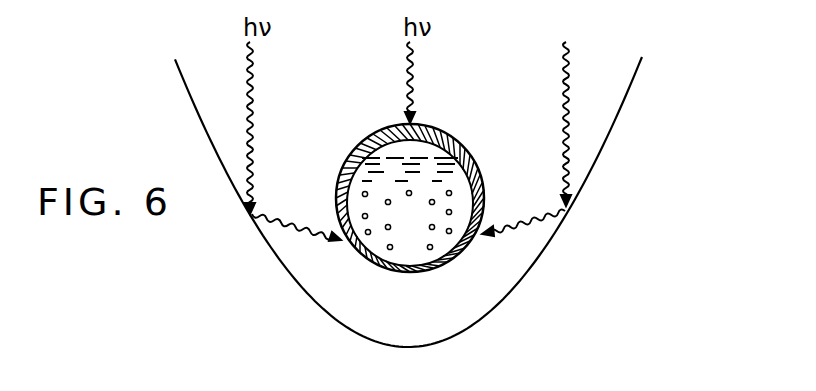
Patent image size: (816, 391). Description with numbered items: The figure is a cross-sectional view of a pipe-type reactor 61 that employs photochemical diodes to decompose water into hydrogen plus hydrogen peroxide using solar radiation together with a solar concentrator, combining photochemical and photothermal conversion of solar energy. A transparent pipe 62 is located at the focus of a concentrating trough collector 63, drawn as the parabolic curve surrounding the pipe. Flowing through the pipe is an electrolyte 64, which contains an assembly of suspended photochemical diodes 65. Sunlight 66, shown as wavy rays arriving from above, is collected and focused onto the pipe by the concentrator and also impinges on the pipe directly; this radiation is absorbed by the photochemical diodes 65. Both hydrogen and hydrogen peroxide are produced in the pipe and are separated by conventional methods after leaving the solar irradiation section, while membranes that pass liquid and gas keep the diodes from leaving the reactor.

The pipe-type reactor 61 is at (416, 228).
The transparent pipe 62 is at (453, 257).
The concentrating trough collector 63 is at (541, 255).
The electrolyte 64 is at (457, 184).
The photochemical diodes 65 is at (391, 250).
The sunlight 66 is at (566, 70).